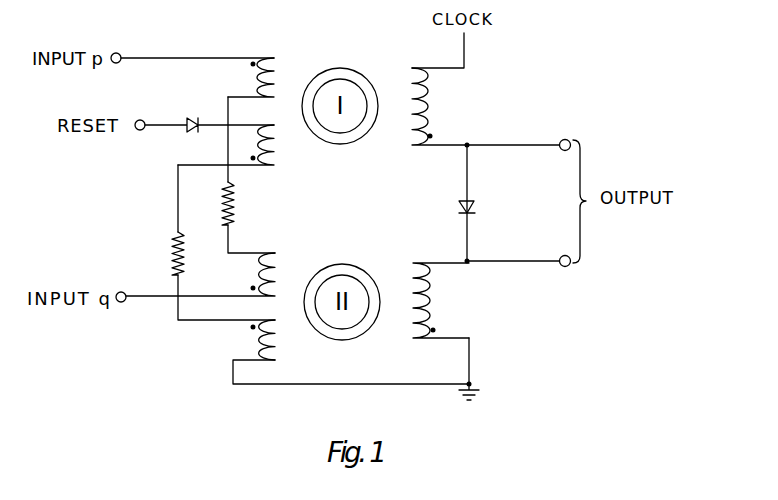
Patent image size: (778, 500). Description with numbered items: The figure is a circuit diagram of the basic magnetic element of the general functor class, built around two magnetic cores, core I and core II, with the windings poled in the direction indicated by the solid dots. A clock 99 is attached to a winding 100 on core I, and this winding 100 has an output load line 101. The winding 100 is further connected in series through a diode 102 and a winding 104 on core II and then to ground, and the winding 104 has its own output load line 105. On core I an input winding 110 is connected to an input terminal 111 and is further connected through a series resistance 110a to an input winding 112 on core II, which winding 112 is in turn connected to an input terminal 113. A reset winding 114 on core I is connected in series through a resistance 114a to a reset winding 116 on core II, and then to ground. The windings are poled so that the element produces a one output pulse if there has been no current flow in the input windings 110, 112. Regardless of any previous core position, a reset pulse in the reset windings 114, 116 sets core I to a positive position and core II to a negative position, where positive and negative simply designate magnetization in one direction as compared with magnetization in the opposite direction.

The clock 99 is at (464, 61).
The winding 100 is at (410, 71).
The output load line 101 is at (505, 144).
The diode 102 is at (458, 204).
The winding 104 is at (433, 303).
The output load line 105 is at (520, 262).
The input winding 110 is at (275, 69).
The series resistance 110a is at (235, 212).
The input terminal 111 is at (121, 55).
The input winding 112 is at (276, 265).
The input terminal 113 is at (125, 301).
The reset winding 114 is at (276, 150).
The resistance 114a is at (176, 268).
The reset winding 116 is at (277, 347).